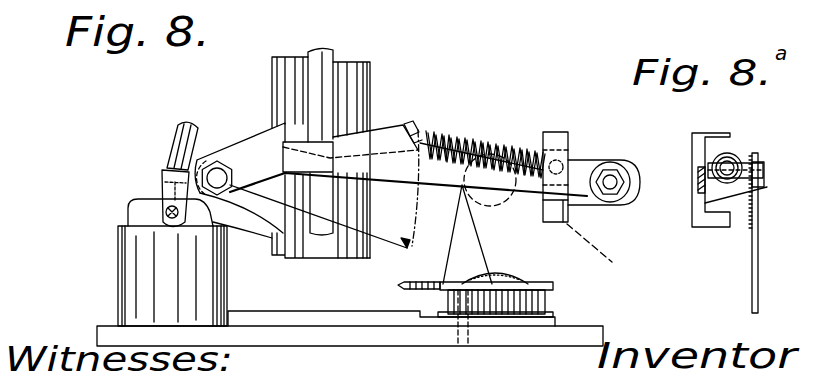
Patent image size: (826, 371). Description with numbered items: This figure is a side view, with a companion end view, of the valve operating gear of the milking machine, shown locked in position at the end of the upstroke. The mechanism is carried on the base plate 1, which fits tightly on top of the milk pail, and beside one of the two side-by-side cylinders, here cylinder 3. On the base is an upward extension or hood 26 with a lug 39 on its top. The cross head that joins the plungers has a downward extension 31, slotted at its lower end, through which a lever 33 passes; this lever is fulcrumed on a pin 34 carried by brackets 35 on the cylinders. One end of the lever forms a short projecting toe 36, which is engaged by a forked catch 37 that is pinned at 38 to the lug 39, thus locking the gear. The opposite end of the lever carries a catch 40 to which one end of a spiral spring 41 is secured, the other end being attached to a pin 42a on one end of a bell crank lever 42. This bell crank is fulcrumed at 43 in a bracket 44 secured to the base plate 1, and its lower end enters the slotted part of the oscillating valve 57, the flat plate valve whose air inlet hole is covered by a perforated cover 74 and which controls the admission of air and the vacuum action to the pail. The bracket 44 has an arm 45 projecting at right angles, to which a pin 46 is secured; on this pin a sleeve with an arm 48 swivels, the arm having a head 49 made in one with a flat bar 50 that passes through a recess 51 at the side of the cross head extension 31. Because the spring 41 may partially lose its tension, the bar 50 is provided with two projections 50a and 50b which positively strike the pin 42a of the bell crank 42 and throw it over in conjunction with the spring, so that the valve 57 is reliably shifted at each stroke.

In FIG. 8, the base plate 1 is at (278, 333).
In FIG. 8, the cylinder 3 is at (367, 67).
In FIG. 8, the upward extension or hood 26 is at (143, 263).
In FIG. 8, the downward extension 31 is at (333, 48).
In FIG. 8, the lever 33 is at (385, 135).
In FIG. 8, the pin 34 is at (173, 163).
In FIG. 8, the brackets 35 is at (263, 147).
In FIG. 8, the toe 36 is at (163, 182).
In FIG. 8, the forked catch 37 is at (172, 145).
In FIG. 8, the pin 38 is at (130, 210).
In FIG. 8, the lug 39 is at (230, 222).
In FIG. 8, the catch 40 is at (408, 132).
In FIG. 8, the spiral spring 41 is at (463, 140).
In FIG. 8A, the spiral spring 41 is at (732, 152).
In FIG. 8, the bell crank lever 42 is at (530, 150).
In FIG. 8A, the bell crank lever 42 is at (752, 281).
In FIG. 8, the pin 42a is at (587, 202).
In FIG. 8A, the pin 42a is at (740, 162).
In FIG. 8, the fulcrum 43 is at (493, 193).
In FIG. 8, the bracket 44 is at (470, 235).
In FIG. 8, the arm 45 is at (580, 204).
In FIG. 8, the pin 46 is at (630, 183).
In FIG. 8A, the arm 48 is at (692, 172).
In FIG. 8, the head 49 is at (563, 142).
In FIG. 8A, the head 49 is at (758, 205).
In FIG. 8, the flat bar 50 is at (402, 188).
In FIG. 8, the projection 50a is at (713, 231).
In FIG. 8, the projection 50b is at (559, 132).
In FIG. 8A, the projection 50b is at (693, 140).
In FIG. 8, the recess 51 is at (322, 180).
In FIG. 8, the oscillating valve 57 is at (400, 284).
In FIG. 8, the perforated cover 74 is at (457, 281).